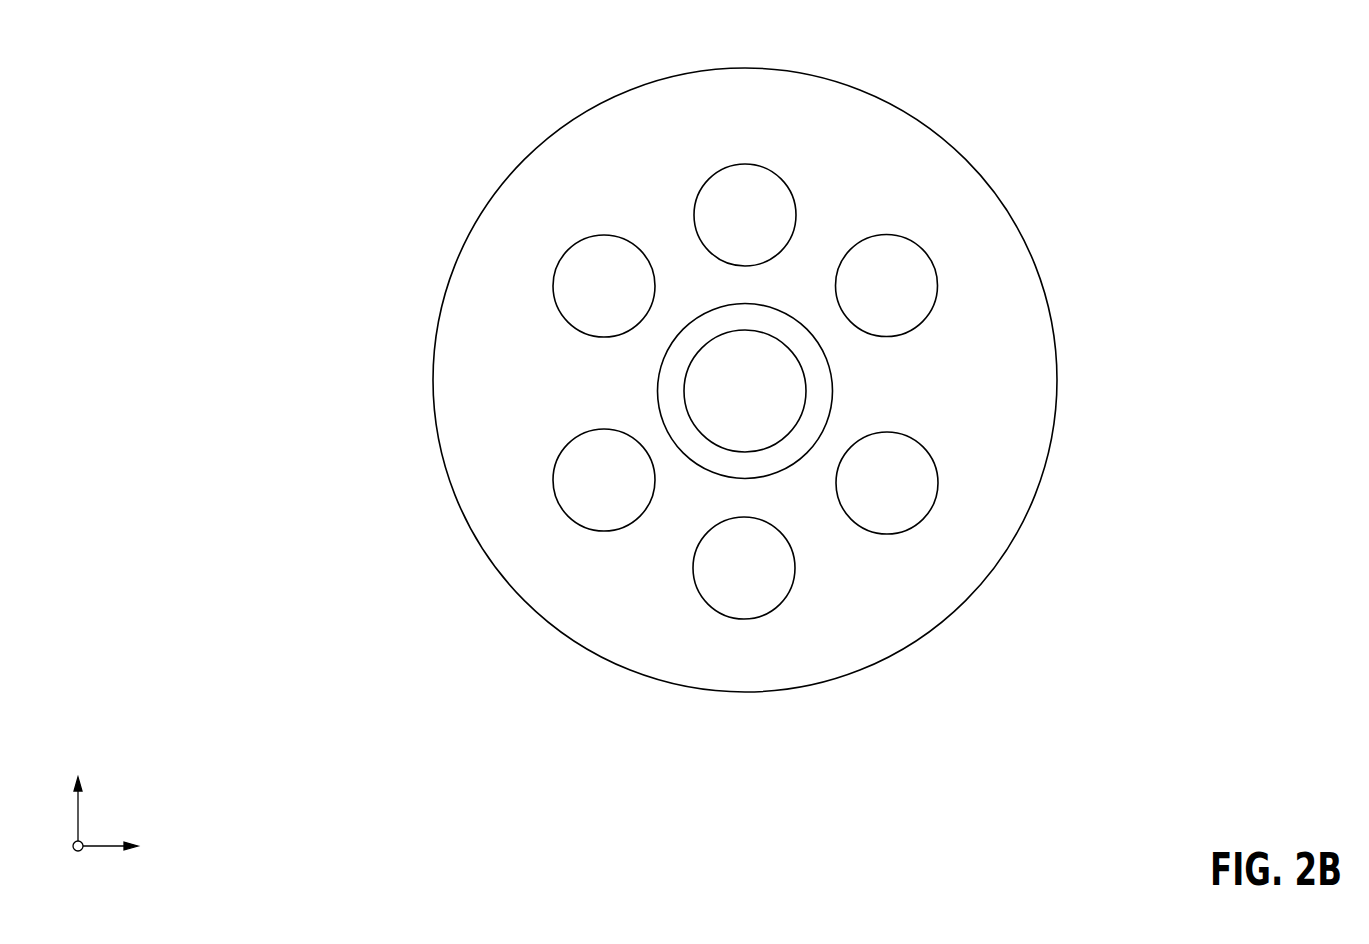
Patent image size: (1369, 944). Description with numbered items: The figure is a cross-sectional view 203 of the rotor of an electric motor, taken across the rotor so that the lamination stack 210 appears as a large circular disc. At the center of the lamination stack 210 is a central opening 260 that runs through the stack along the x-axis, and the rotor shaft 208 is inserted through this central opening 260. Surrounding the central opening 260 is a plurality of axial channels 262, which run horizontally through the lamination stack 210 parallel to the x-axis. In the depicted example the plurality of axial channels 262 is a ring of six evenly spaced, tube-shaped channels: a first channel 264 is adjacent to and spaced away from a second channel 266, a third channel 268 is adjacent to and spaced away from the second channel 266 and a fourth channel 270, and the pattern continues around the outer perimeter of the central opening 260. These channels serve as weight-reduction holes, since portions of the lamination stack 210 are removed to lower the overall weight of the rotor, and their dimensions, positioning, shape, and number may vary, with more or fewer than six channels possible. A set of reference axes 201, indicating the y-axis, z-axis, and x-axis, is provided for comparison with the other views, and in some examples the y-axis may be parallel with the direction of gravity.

The cross-sectional view 203 is at (1225, 37).
The lamination stack 210 is at (759, 128).
The rotor shaft 208 is at (757, 322).
The central opening 260 is at (825, 381).
The plurality of axial channels 262 is at (772, 361).
The first channel 264 is at (767, 167).
The second channel 266 is at (917, 246).
The third channel 268 is at (927, 449).
The fourth channel 270 is at (741, 518).
The reference axes 201 is at (120, 803).